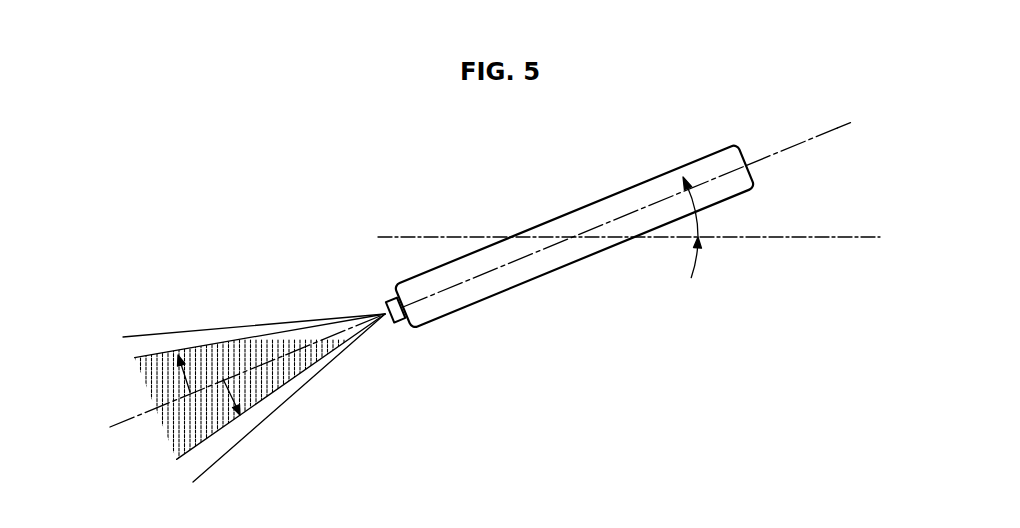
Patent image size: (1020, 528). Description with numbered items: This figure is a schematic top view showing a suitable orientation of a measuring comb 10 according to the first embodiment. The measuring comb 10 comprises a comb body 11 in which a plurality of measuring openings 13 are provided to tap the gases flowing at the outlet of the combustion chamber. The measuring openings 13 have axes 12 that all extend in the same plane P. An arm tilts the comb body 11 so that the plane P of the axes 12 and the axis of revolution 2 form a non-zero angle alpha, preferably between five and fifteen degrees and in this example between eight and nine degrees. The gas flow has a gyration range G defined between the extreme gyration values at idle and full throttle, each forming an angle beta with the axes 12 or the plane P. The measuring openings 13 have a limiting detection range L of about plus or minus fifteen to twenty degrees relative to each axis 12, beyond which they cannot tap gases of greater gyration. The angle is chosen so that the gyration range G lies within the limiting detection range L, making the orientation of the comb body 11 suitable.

The axis of revolution 2 is at (810, 240).
The measuring comb 10 is at (573, 204).
The comb body 11 is at (648, 195).
The axes of the measuring openings 12 is at (788, 147).
The measuring openings 13 is at (388, 302).
The plane of the axes of the measuring openings P is at (838, 132).
The limiting detection range L is at (262, 322).
The gyration range G is at (183, 426).